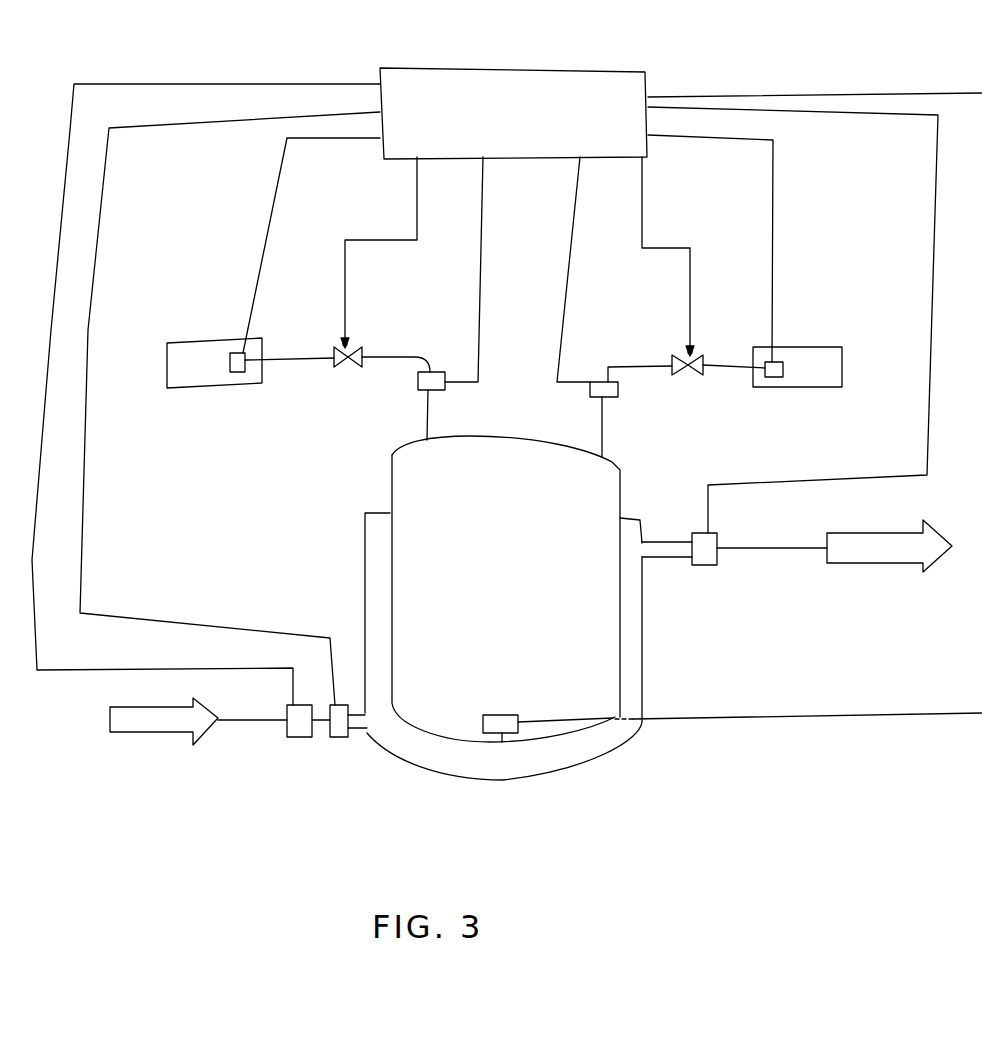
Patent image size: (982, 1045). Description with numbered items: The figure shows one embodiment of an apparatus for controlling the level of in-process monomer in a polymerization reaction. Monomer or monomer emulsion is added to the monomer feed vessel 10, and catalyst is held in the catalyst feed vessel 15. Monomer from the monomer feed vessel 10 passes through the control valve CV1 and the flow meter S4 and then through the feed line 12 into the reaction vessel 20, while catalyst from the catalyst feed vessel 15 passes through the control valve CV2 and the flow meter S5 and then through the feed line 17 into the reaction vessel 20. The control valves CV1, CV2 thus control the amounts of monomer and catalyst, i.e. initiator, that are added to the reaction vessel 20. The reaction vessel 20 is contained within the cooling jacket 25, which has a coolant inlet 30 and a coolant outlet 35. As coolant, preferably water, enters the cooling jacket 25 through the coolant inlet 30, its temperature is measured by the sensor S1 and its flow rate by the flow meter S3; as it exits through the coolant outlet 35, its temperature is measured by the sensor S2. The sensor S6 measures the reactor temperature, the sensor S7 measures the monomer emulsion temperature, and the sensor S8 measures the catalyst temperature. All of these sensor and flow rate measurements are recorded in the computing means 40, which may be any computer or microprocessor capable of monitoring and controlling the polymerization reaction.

The monomer feed vessel 10 is at (188, 390).
The feed line 12 is at (433, 410).
The catalyst feed vessel 15 is at (815, 390).
The feed line 17 is at (605, 430).
The reaction vessel 20 is at (392, 490).
The cooling jacket 25 is at (538, 783).
The coolant inlet 30 is at (365, 735).
The coolant outlet 35 is at (662, 560).
The computing means 40 is at (650, 90).
The sensor S1 is at (293, 737).
The sensor S2 is at (705, 565).
The flow meter S3 is at (337, 742).
The flow meter S4 is at (440, 368).
The flow meter S5 is at (592, 380).
The sensor S6 is at (490, 713).
The sensor S7 is at (240, 352).
The sensor S8 is at (777, 348).
The control valve CV1 is at (343, 370).
The control valve CV2 is at (687, 375).